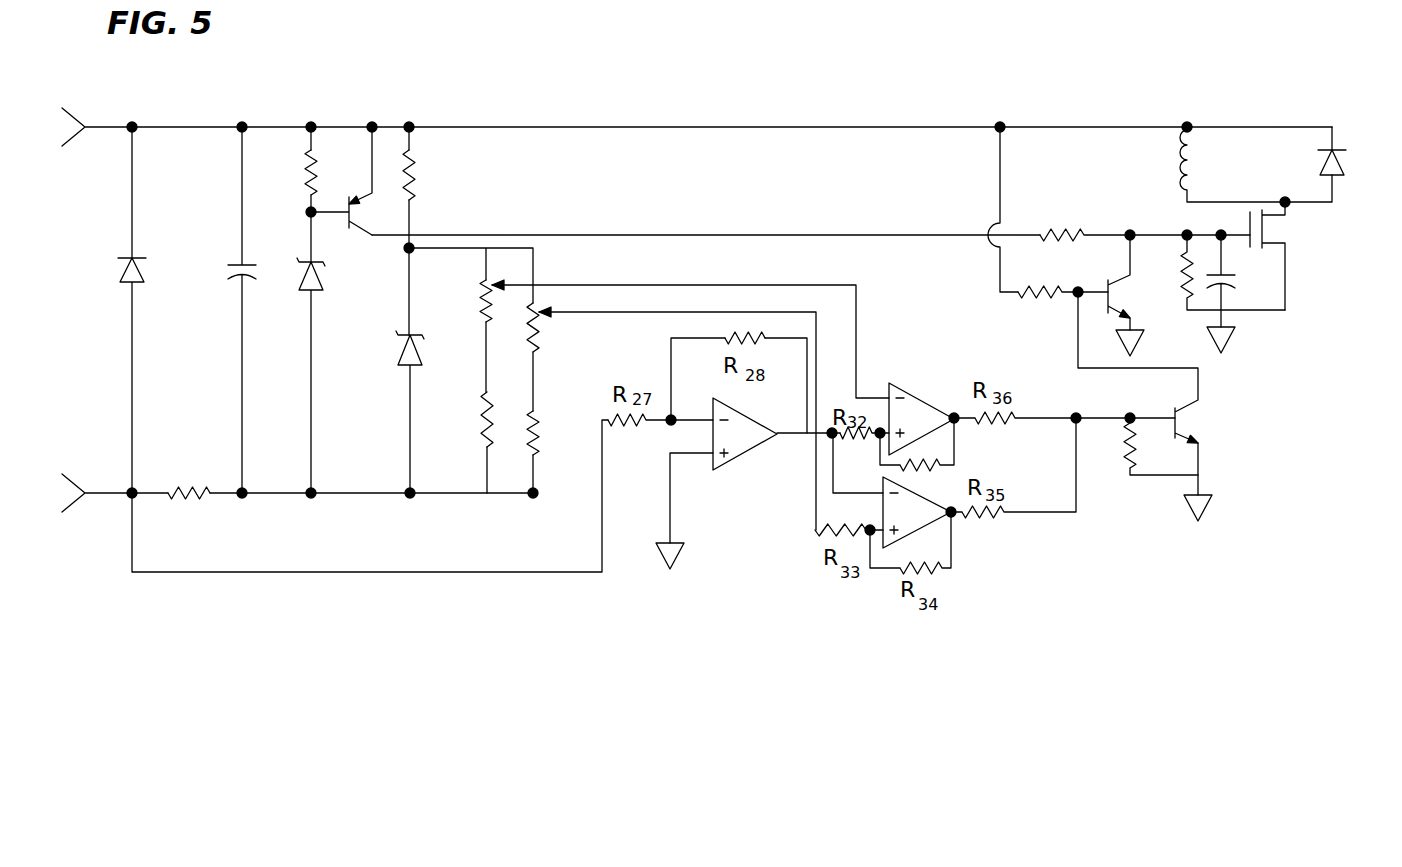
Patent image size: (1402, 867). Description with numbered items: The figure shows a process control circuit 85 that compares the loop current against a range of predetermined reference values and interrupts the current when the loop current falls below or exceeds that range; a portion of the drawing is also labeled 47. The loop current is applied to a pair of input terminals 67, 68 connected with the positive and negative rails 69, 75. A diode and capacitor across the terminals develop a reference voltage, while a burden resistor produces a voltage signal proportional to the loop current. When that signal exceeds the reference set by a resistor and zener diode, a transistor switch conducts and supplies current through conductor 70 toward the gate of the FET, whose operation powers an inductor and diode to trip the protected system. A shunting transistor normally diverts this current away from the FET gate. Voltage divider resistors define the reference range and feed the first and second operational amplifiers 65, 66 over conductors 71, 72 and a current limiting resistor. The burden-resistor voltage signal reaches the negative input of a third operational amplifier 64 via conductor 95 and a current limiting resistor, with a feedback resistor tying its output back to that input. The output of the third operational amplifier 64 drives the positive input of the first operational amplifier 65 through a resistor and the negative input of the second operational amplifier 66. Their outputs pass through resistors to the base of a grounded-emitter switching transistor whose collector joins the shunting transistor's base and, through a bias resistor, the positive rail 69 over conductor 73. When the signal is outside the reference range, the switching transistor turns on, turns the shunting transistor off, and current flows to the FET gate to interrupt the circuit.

The voltage regulator circuit 47 is at (483, 632).
The third operational amplifier 64 is at (742, 453).
The first operational amplifier 65 is at (915, 393).
The second operational amplifier 66 is at (905, 537).
The input terminal 67 is at (138, 121).
The input terminal 68 is at (135, 488).
The positive rail 69 is at (620, 127).
The conductor 70 is at (612, 235).
The conductor 71 is at (615, 285).
The conductor 72 is at (617, 312).
The conductor 73 is at (1000, 175).
The negative rail 75 is at (332, 493).
The process control circuit 85 is at (1010, 640).
The conductor 95 is at (432, 570).